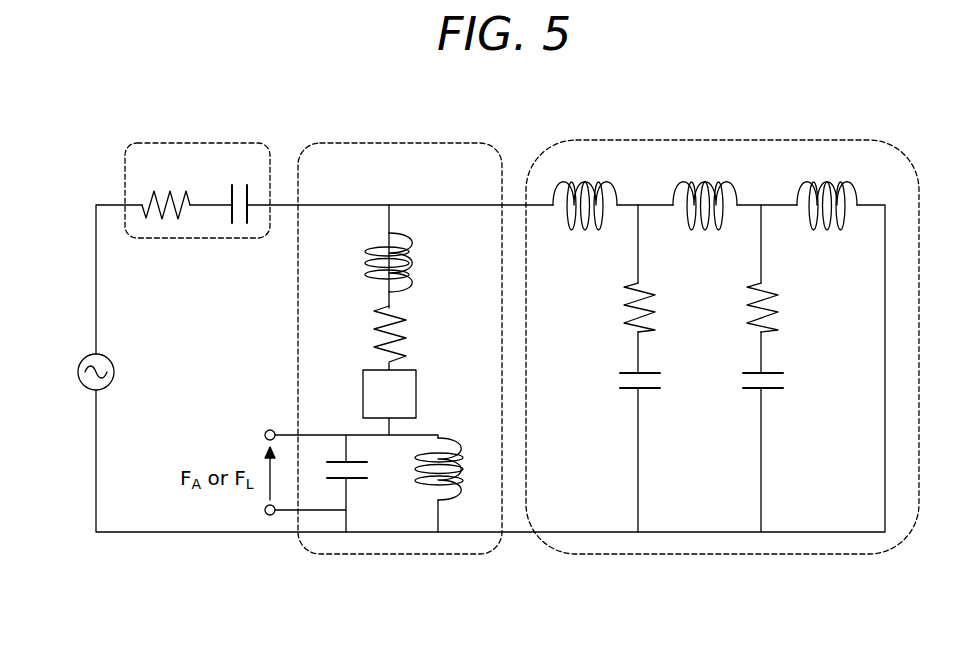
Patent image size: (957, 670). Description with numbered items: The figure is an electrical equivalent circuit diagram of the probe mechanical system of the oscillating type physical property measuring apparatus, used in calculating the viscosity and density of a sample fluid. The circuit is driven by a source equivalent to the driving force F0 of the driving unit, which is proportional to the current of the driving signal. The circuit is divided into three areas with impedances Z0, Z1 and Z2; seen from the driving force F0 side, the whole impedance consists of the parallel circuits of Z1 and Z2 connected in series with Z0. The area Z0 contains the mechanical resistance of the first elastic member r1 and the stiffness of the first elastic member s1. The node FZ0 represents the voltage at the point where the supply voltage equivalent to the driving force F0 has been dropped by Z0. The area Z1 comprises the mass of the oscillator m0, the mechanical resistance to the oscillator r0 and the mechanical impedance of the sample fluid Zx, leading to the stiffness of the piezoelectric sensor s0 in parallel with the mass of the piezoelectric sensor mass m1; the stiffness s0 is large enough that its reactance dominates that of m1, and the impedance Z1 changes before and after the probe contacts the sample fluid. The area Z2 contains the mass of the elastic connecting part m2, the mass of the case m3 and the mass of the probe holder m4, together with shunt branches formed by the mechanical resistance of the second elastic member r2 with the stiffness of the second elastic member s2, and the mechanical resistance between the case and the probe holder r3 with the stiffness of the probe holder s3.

The driving force of the driving unit F0 is at (110, 373).
The mechanical impedance of oscillator for first area Z0 is at (197, 176).
The mechanical resistance of the first elastic member r1 is at (166, 189).
The stiffness of the first elastic member s1 is at (242, 191).
The mechanical impedance of oscillator for second area Z1 is at (400, 334).
The voltage at the point dropped by Z0 FZ0 is at (390, 205).
The mass of the oscillator m0 is at (369, 262).
The mechanical resistance to the oscillator r0 is at (370, 334).
The mechanical impedance of the sample fluid Zx is at (389, 394).
The stiffness of the piezoelectric sensor s0 is at (360, 477).
The mass of the piezoelectric sensor mass m1 is at (457, 469).
The mechanical impedance of oscillator for third area Z2 is at (722, 331).
The mass of the elastic connecting part m2 is at (585, 191).
The mass of the case m3 is at (705, 191).
The mass of the probe holder m4 is at (827, 191).
The mechanical resistance of the second elastic member r2 is at (656, 307).
The stiffness of the second elastic member s2 is at (655, 385).
The mechanical resistance between the case and the probe holder r3 is at (779, 307).
The stiffness of the probe holder s3 is at (778, 385).